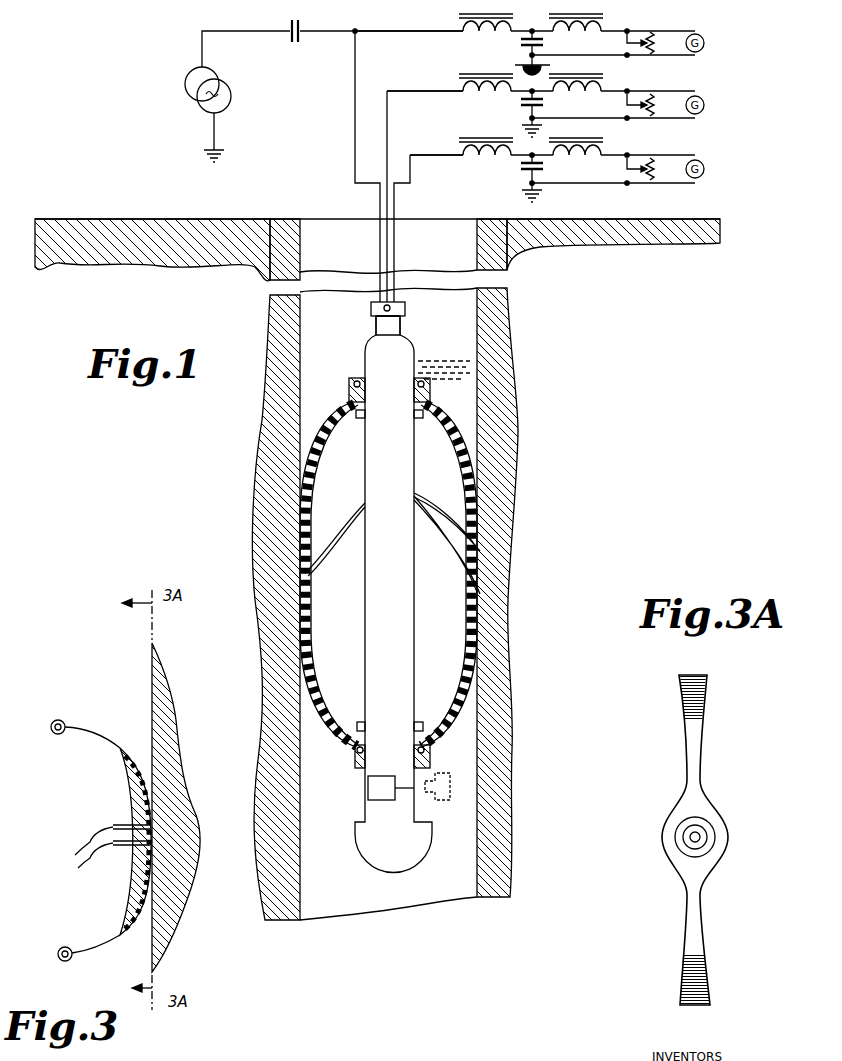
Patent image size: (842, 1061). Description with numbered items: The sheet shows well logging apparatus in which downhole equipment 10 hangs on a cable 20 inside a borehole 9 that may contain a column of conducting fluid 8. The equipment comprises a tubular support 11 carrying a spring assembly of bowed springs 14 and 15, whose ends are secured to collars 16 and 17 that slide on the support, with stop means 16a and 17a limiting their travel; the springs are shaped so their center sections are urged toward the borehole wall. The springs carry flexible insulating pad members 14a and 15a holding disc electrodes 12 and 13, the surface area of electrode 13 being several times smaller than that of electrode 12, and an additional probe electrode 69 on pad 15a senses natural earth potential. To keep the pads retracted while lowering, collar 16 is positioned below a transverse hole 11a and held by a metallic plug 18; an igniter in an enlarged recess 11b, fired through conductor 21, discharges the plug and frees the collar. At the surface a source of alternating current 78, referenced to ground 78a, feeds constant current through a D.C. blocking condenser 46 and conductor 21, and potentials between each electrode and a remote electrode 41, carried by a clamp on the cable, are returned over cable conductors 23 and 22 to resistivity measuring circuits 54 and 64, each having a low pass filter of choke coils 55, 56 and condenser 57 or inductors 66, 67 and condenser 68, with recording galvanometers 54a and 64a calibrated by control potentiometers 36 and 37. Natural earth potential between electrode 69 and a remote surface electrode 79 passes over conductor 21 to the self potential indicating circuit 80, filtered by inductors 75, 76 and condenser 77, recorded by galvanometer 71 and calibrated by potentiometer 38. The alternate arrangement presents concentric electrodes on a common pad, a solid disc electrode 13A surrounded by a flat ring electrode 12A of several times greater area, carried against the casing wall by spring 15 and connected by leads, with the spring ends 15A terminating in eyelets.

In FIG. 1, the column of conducting fluid 8 is at (446, 364).
In FIG. 1, the borehole 9 is at (482, 317).
In FIG. 3, the borehole 9 is at (152, 668).
In FIG. 1, the downhole equipment 10 is at (466, 413).
In FIG. 1, the tubular support 11 is at (398, 482).
In FIG. 1, the hole 11a is at (416, 792).
In FIG. 1, the enlarged recess 11b is at (380, 788).
In FIG. 1, the electrode 12 is at (305, 577).
In FIG. 3, the electrode 12A is at (152, 827).
In FIG. 3A, the electrode 12A is at (712, 823).
In FIG. 1, the electrode 13 is at (478, 549).
In FIG. 3, the electrode 13A is at (152, 843).
In FIG. 3A, the electrode 13A is at (700, 837).
In FIG. 1, the bowed spring 14 is at (345, 400).
In FIG. 1, the wall engaging pad member 14a is at (305, 470).
In FIG. 1, the bowed spring 15 is at (430, 386).
In FIG. 3A, the bowed spring 15 is at (705, 700).
In FIG. 1, the wall engaging pad member 15a is at (478, 490).
In FIG. 3, the wall engaging pad member 15a is at (146, 768).
In FIG. 3A, the wall engaging pad member 15a is at (700, 760).
In FIG. 3, the spring end eyelet 15A is at (140, 920).
In FIG. 1, the collar 16 is at (353, 763).
In FIG. 1, the stop means 16a is at (435, 722).
In FIG. 1, the collar 17 is at (357, 378).
In FIG. 1, the stop means 17a is at (358, 418).
In FIG. 1, the metallic plug 18 is at (445, 778).
In FIG. 1, the cable 20 is at (376, 325).
In FIG. 1, the conductor 21 is at (355, 88).
In FIG. 1, the cable conductor 22 is at (387, 120).
In FIG. 1, the cable conductor 23 is at (410, 176).
In FIG. 1, the control potentiometer 36 is at (613, 169).
In FIG. 1, the control potentiometer 37 is at (613, 104).
In FIG. 1, the potentiometer 38 is at (613, 43).
In FIG. 1, the remote electrode 41 is at (398, 306).
In FIG. 1, the D.C. blocking condenser 46 is at (300, 40).
In FIG. 1, the resistivity measuring circuit 54 is at (711, 155).
In FIG. 1, the recording galvanometer 54a is at (703, 176).
In FIG. 1, the choke coil 55 is at (484, 138).
In FIG. 1, the choke coil 56 is at (600, 139).
In FIG. 1, the condenser 57 is at (523, 170).
In FIG. 1, the resistivity measuring circuit 64 is at (716, 90).
In FIG. 1, the recording galvanometer 64a is at (705, 106).
In FIG. 1, the inductor 66 is at (468, 74).
In FIG. 1, the inductor 67 is at (600, 76).
In FIG. 1, the condenser 68 is at (522, 105).
In FIG. 1, the probe electrode 69 is at (478, 592).
In FIG. 1, the recording galvanometer 71 is at (705, 43).
In FIG. 1, the inductor 75 is at (459, 14).
In FIG. 1, the inductor 76 is at (602, 15).
In FIG. 1, the condenser 77 is at (543, 39).
In FIG. 1, the source of alternating current 78 is at (231, 97).
In FIG. 1, the ground 78a is at (204, 157).
In FIG. 1, the remote surface electrode 79 is at (523, 67).
In FIG. 1, the self potential indicating circuit 80 is at (716, 23).